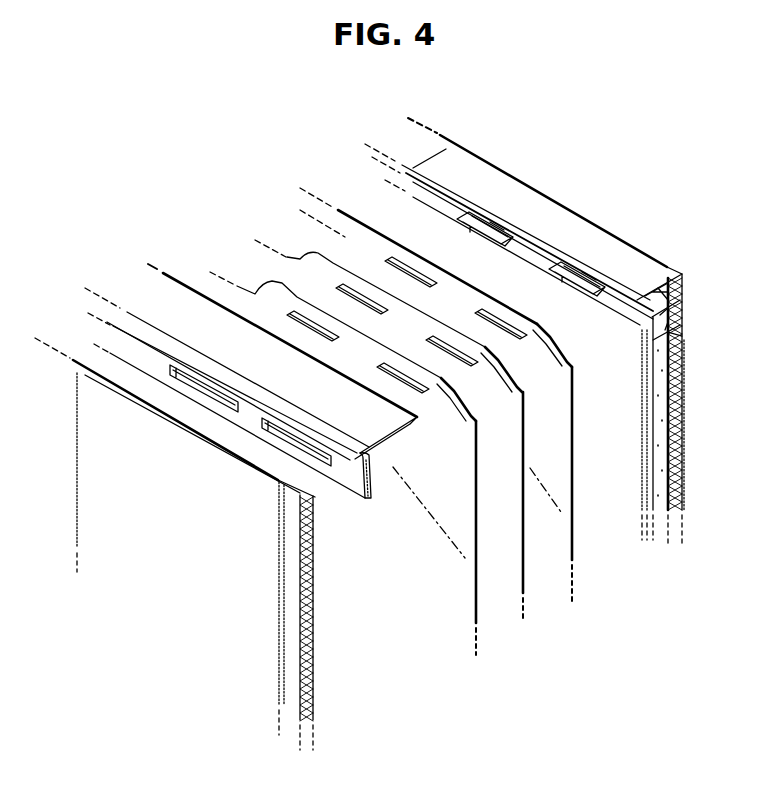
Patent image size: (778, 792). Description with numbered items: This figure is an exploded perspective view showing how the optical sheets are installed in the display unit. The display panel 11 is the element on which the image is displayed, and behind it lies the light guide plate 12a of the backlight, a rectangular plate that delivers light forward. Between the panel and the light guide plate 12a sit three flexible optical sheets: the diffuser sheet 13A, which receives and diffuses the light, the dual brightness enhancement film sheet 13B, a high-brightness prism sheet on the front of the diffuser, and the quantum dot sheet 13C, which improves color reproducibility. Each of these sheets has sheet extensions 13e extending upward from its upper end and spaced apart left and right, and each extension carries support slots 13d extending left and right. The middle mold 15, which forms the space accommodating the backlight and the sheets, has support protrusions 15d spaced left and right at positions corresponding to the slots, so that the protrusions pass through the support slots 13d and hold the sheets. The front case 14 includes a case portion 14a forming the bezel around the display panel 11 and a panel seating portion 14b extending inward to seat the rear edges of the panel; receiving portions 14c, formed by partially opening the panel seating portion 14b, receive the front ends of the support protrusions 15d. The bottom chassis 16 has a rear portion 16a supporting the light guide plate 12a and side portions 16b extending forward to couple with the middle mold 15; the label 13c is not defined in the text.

The display panel 11 is at (298, 700).
The light guide plate 12a is at (660, 382).
The diffuser sheet 13A is at (573, 553).
The dual brightness enhancement film sheet 13B is at (524, 585).
The quantum dot sheet 13C is at (477, 615).
The bracket end 13c is at (684, 333).
The support slots 13d is at (306, 316).
The sheet extensions 13e is at (548, 338).
The front case 14 is at (323, 410).
The case portion 14a is at (210, 328).
The panel seating portion 14b is at (348, 478).
The receiving portions 14c is at (268, 433).
The middle mold 15 is at (516, 221).
The support protrusions 15d is at (490, 213).
The bottom chassis 16 is at (686, 391).
The rear portion 16a is at (685, 470).
The side portions 16b is at (668, 278).